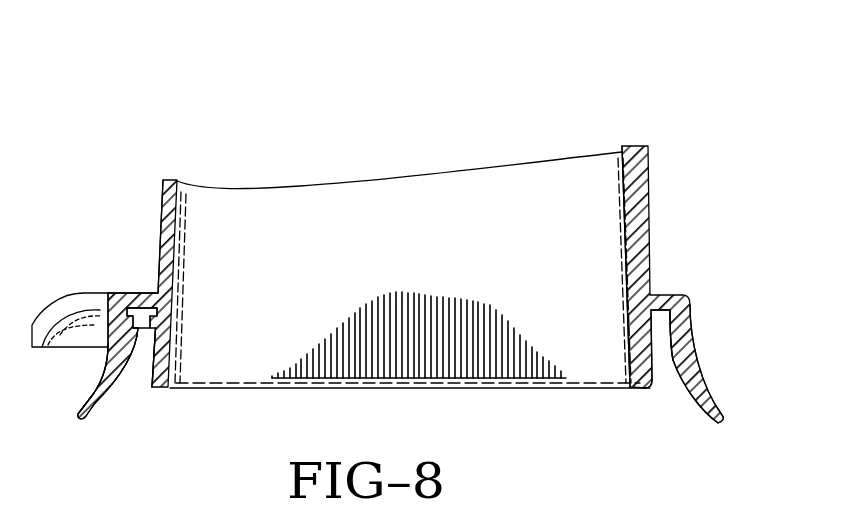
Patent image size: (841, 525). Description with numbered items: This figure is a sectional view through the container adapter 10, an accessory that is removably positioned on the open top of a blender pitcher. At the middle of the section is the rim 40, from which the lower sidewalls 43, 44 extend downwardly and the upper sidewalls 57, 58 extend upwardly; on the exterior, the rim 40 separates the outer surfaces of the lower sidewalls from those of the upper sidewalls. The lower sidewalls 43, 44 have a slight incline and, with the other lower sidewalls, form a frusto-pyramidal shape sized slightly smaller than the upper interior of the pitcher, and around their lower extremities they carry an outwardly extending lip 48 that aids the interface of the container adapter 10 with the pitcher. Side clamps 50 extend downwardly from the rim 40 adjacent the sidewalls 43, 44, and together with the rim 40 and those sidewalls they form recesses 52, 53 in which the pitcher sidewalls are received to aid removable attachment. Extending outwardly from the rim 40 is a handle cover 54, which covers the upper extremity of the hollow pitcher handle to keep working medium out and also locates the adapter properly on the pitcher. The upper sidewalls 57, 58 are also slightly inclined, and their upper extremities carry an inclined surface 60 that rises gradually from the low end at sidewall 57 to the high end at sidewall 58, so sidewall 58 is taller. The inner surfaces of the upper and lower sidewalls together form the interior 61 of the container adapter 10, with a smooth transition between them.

The container adapter 10 is at (88, 120).
The rim 40 is at (118, 302).
The lower sidewall 43 is at (168, 318).
The lower sidewall 44 is at (637, 328).
The outwardly extending lip 48 is at (145, 383).
The side clamp 50 is at (112, 372).
The recess 52 is at (138, 368).
The recess 53 is at (660, 368).
The handle cover 54 is at (58, 312).
The upper sidewall 57 is at (165, 210).
The upper sidewall 58 is at (640, 228).
The inclined surface 60 is at (166, 180).
The interior 61 is at (306, 222).